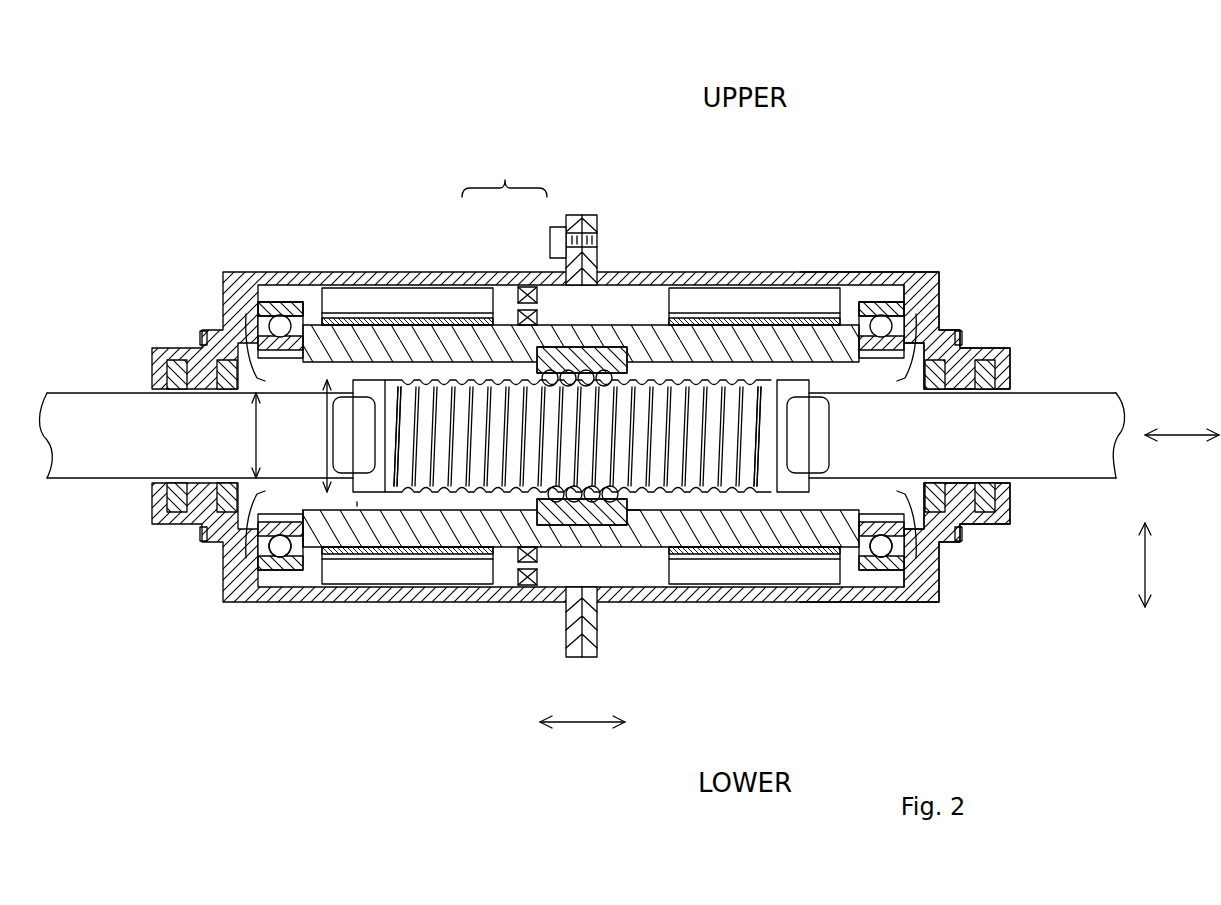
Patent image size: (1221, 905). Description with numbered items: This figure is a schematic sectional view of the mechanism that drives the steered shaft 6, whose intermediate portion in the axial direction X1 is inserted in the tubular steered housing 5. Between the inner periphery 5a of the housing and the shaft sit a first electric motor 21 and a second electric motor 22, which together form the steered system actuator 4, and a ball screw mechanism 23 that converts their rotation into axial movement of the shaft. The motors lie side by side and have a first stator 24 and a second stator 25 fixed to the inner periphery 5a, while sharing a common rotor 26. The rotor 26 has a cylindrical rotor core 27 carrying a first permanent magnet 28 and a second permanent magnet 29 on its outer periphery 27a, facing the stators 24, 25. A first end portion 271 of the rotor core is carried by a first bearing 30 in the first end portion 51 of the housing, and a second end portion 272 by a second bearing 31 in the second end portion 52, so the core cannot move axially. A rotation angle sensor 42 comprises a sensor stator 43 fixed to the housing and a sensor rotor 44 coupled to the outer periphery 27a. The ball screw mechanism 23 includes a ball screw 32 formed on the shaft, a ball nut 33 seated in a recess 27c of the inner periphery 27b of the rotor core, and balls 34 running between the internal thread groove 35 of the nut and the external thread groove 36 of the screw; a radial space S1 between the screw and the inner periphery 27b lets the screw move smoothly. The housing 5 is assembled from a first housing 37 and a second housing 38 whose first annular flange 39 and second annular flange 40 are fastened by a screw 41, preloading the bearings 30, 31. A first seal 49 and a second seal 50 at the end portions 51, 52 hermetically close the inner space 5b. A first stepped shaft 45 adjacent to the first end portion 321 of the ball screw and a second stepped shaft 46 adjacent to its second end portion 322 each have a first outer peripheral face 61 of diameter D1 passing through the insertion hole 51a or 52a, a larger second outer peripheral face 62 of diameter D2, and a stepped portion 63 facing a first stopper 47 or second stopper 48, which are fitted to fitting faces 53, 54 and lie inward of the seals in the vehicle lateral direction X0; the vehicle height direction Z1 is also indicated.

The steered system actuator 4 is at (393, 266).
The steered housing 5 is at (763, 266).
The inner periphery 5a is at (633, 585).
The inner space 5b is at (246, 314).
The steered shaft 6 is at (1094, 386).
The first electric motor 21 is at (372, 282).
The second electric motor 22 is at (794, 281).
The ball screw mechanism 23 is at (583, 333).
The first stator 24 is at (435, 300).
The second stator 25 is at (713, 300).
The rotor 26 is at (565, 552).
The rotor core 27 is at (453, 530).
The outer periphery 27a is at (300, 556).
The inner periphery 27b is at (440, 548).
The recess 27c is at (597, 522).
The first permanent magnet 28 is at (473, 552).
The second permanent magnet 29 is at (722, 560).
The first bearing 30 is at (280, 557).
The second bearing 31 is at (882, 557).
The ball screw 32 is at (684, 500).
The ball nut 33 is at (540, 524).
The balls 34 is at (648, 515).
The spiral thread groove 35 is at (603, 393).
The spiral thread groove 36 is at (753, 414).
The first housing 37 is at (474, 288).
The second housing 38 is at (673, 288).
The first annular flange 39 is at (578, 233).
The second annular flange 40 is at (595, 225).
The screw 41 is at (557, 227).
The rotation angle sensor 42 is at (504, 172).
The sensor stator 43 is at (520, 297).
The sensor rotor 44 is at (515, 320).
The first stepped shaft 45 is at (355, 372).
The second stepped shaft 46 is at (808, 372).
The first stopper 47 is at (226, 392).
The second stopper 48 is at (936, 392).
The first seal 49 is at (170, 375).
The second seal 50 is at (998, 374).
The first end portion 51 is at (200, 533).
The insertion hole 51a is at (148, 478).
The second end portion 52 is at (996, 533).
The insertion hole 52a is at (1016, 482).
The fitting face 53 is at (204, 331).
The fitting face 54 is at (950, 350).
The first outer peripheral face 61 is at (277, 314).
The second outer peripheral face 62 is at (302, 568).
The stepped portion 63 is at (296, 302).
The first end portion 271 is at (233, 553).
The second end portion 272 is at (930, 553).
The first end portion 321 is at (389, 494).
The second end portion 322 is at (768, 500).
The diameter D1 is at (250, 452).
The diameter D2 is at (323, 440).
The radial space S1 is at (357, 502).
The vehicle lateral direction X0 is at (583, 724).
The axial direction X1 is at (1182, 438).
The vehicle height direction Z1 is at (1148, 565).